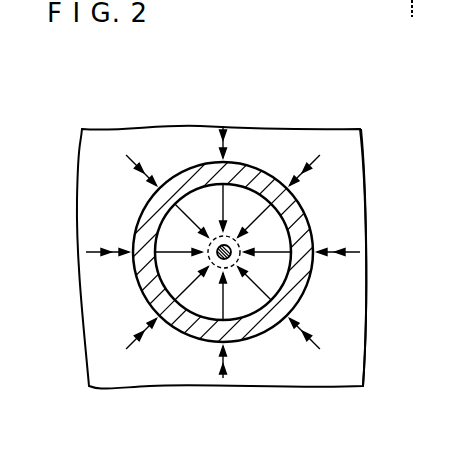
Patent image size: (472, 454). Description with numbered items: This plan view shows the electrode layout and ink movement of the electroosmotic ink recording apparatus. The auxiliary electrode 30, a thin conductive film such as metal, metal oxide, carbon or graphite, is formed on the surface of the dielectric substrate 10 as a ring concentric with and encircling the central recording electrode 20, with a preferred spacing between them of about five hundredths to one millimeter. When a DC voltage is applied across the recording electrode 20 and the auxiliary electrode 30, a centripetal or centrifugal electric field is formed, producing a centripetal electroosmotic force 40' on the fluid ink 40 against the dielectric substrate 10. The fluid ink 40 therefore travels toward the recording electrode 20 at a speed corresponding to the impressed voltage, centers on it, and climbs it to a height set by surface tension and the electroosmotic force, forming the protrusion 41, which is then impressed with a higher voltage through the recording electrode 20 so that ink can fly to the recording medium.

The dielectric substrate 10 is at (271, 232).
The recording electrode 20 is at (239, 251).
The auxiliary electrode 30 is at (245, 166).
The fluid ink 40 is at (194, 257).
The centripetal electroosmotic force 40' is at (192, 152).
The protrusion 41 is at (220, 263).